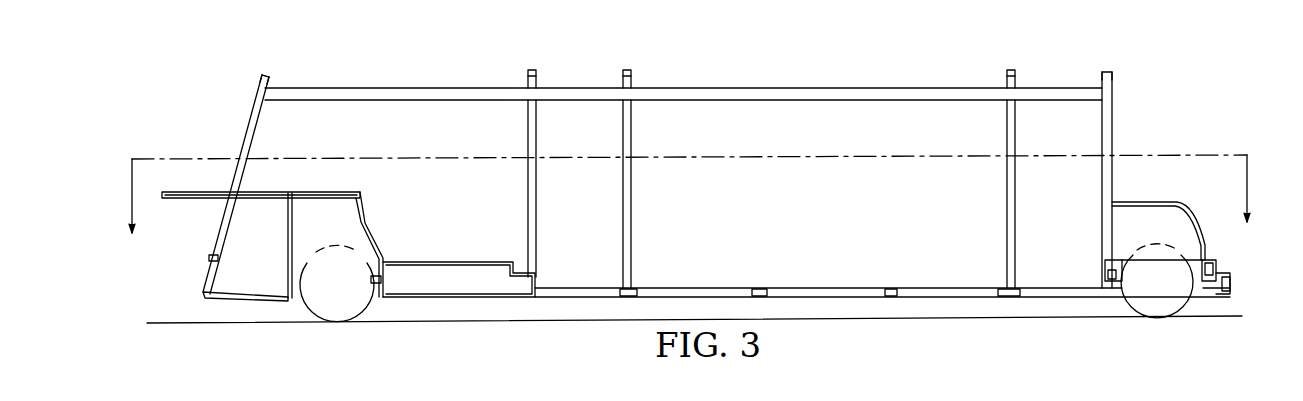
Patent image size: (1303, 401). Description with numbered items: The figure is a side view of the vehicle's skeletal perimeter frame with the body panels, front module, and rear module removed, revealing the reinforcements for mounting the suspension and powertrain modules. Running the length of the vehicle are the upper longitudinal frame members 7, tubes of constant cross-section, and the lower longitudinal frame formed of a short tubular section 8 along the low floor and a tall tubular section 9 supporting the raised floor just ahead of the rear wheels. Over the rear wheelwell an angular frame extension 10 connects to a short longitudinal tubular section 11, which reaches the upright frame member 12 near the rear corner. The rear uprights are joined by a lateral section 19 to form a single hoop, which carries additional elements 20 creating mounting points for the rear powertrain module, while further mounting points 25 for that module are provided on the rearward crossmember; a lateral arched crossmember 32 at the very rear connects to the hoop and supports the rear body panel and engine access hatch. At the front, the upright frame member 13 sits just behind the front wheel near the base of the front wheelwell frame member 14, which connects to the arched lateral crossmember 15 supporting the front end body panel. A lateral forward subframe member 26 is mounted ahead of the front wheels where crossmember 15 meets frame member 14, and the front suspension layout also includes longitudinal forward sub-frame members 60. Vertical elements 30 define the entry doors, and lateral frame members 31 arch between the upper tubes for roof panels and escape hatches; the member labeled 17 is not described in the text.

The upper longitudinal frame member 7 is at (805, 86).
The lower longitudinal frame member 8 is at (858, 298).
The lower longitudinal frame member 9 is at (455, 286).
The frame extension 10 is at (366, 203).
The short longitudinal tubular section 11 is at (250, 297).
The upright frame member 12 is at (246, 122).
The upright frame member 13 is at (1112, 122).
The front wheelwell frame member 14 is at (1178, 203).
The arched lateral crossmember 15 is at (1232, 281).
The rear mast top 17 is at (1104, 72).
The lateral section 19 is at (266, 72).
The additional element 20 is at (208, 260).
The mounting point 25 is at (374, 284).
The lateral forward subframe member 26 is at (1200, 282).
The vertical element 30 is at (537, 187).
The lateral frame member 31 is at (530, 68).
The lateral arched crossmember 32 is at (183, 192).
The longitudinal forward sub-frame member 60 is at (1153, 278).